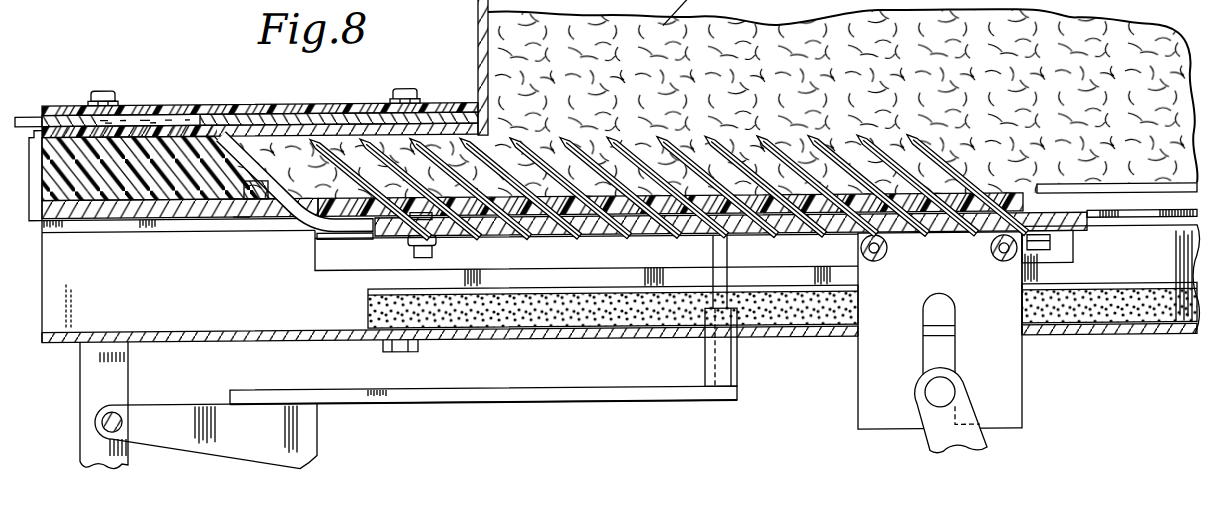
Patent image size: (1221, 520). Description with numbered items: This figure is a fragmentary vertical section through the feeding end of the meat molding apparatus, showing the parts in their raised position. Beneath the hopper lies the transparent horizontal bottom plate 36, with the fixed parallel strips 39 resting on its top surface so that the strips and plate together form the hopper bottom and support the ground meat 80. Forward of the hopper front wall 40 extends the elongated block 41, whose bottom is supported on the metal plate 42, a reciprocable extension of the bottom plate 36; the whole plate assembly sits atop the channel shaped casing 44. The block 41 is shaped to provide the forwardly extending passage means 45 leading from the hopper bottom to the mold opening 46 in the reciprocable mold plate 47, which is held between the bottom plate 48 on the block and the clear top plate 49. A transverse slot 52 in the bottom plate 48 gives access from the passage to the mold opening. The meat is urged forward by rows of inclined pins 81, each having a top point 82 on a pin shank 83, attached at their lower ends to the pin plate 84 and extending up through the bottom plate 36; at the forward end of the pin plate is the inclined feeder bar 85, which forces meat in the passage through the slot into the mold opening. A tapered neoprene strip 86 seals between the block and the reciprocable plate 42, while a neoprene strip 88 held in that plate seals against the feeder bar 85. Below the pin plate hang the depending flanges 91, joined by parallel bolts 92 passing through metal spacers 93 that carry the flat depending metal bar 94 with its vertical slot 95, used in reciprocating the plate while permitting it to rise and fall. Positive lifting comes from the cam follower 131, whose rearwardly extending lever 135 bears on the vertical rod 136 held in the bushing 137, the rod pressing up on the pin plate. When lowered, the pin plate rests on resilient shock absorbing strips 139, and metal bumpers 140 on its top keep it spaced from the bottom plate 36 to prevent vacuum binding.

The bottom plate 36 is at (997, 200).
The parallel coplanar strips 39 is at (1052, 197).
The front wall 40 is at (478, 36).
The elongated block 41 is at (137, 177).
The metal plate 42 is at (85, 220).
The channel shaped casing 44 is at (178, 275).
The passage means 45 is at (314, 173).
The mold opening 46 is at (138, 128).
The mold plate 47 is at (306, 111).
The bottom plate 48 is at (428, 132).
The top plate 49 is at (359, 117).
The transverse slot 52 is at (200, 129).
The ground meat 80 is at (983, 78).
The pins 81 is at (674, 150).
The top point 82 is at (809, 141).
The pin shank 83 is at (835, 157).
The pin plate 84 is at (623, 239).
The feeder bar 85 is at (240, 204).
The strip of flexible neoprene 86 is at (252, 203).
The neoprene strip 88 is at (278, 226).
The depending flanges 91 is at (779, 267).
The bolts 92 is at (873, 270).
The metal spacer 93 is at (882, 263).
The depending metal bar 94 is at (1001, 377).
The vertical slot 95 is at (927, 353).
The cam follower 131 is at (269, 439).
The lever 135 is at (490, 401).
The vertical rod 136 is at (727, 288).
The bushing 137 is at (735, 361).
The shock absorbing strips 139 is at (1082, 302).
The bumpers 140 is at (440, 239).